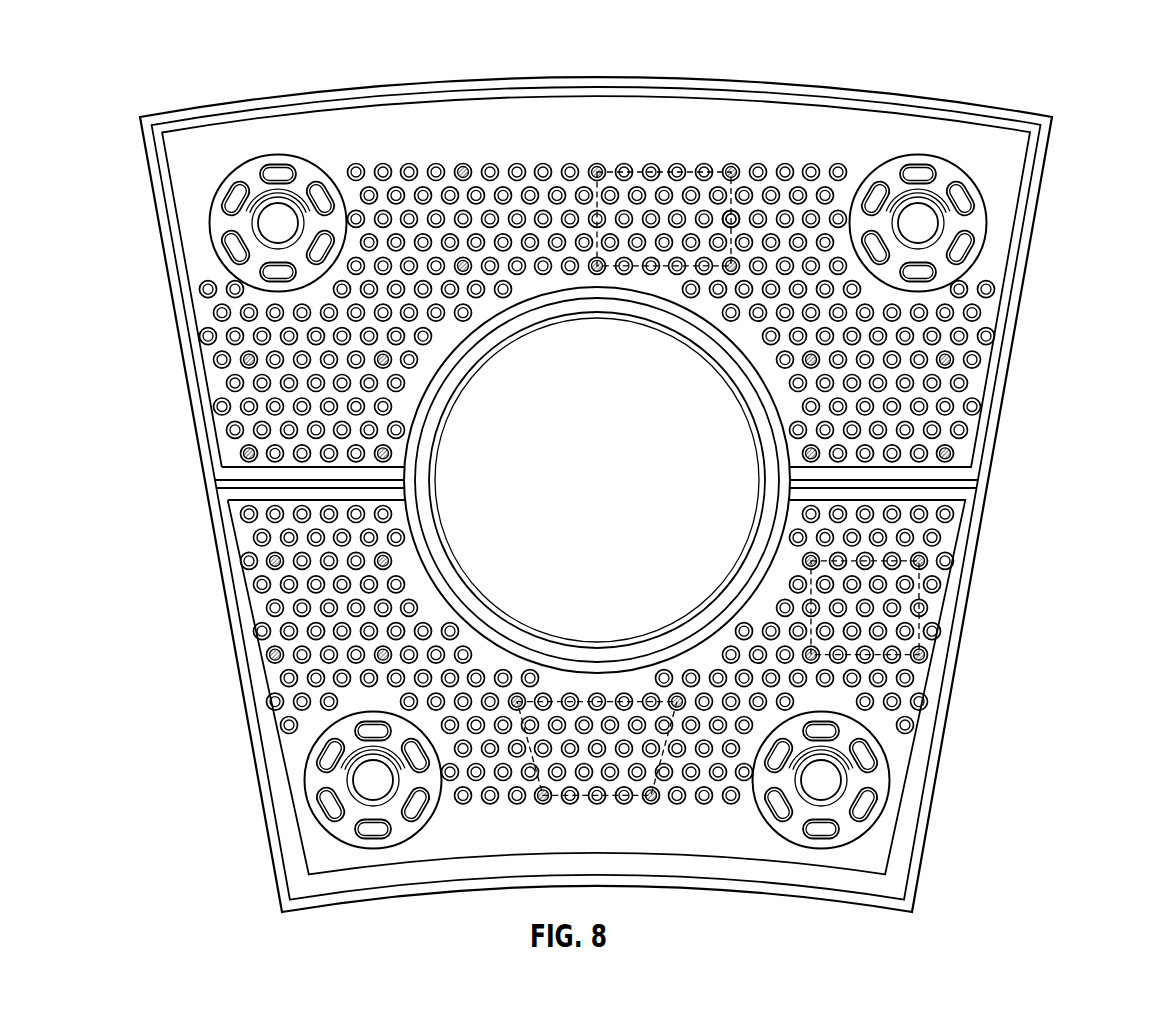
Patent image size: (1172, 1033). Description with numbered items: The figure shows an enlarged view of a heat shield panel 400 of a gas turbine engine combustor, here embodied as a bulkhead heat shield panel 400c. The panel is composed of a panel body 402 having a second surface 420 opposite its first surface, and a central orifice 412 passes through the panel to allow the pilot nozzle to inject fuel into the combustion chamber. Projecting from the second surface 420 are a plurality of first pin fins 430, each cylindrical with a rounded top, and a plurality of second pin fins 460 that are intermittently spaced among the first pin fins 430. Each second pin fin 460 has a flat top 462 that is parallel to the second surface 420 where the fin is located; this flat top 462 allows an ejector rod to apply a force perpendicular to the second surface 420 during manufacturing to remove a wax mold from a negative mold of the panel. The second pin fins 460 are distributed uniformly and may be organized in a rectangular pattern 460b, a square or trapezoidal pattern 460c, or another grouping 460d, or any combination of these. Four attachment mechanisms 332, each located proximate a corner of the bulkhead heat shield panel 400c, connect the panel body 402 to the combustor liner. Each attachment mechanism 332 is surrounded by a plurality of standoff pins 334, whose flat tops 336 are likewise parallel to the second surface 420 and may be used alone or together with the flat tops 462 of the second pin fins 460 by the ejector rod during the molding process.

The heat shield panel 400 is at (122, 62).
The bulkhead heat shield panel 400c is at (257, 92).
The panel body 402 is at (970, 135).
The second surface 420 is at (484, 136).
The first pin fins 430 is at (760, 166).
The second pin fins 460 is at (596, 166).
The flat top 462 is at (598, 166).
The rectangular pattern 460b is at (744, 208).
The square pattern 460c is at (889, 552).
The hole group 460d is at (584, 700).
The attachment mechanism 332 is at (278, 232).
The standoff pins 334 is at (965, 192).
The flat top 336 is at (968, 200).
The orifice 412 is at (516, 626).